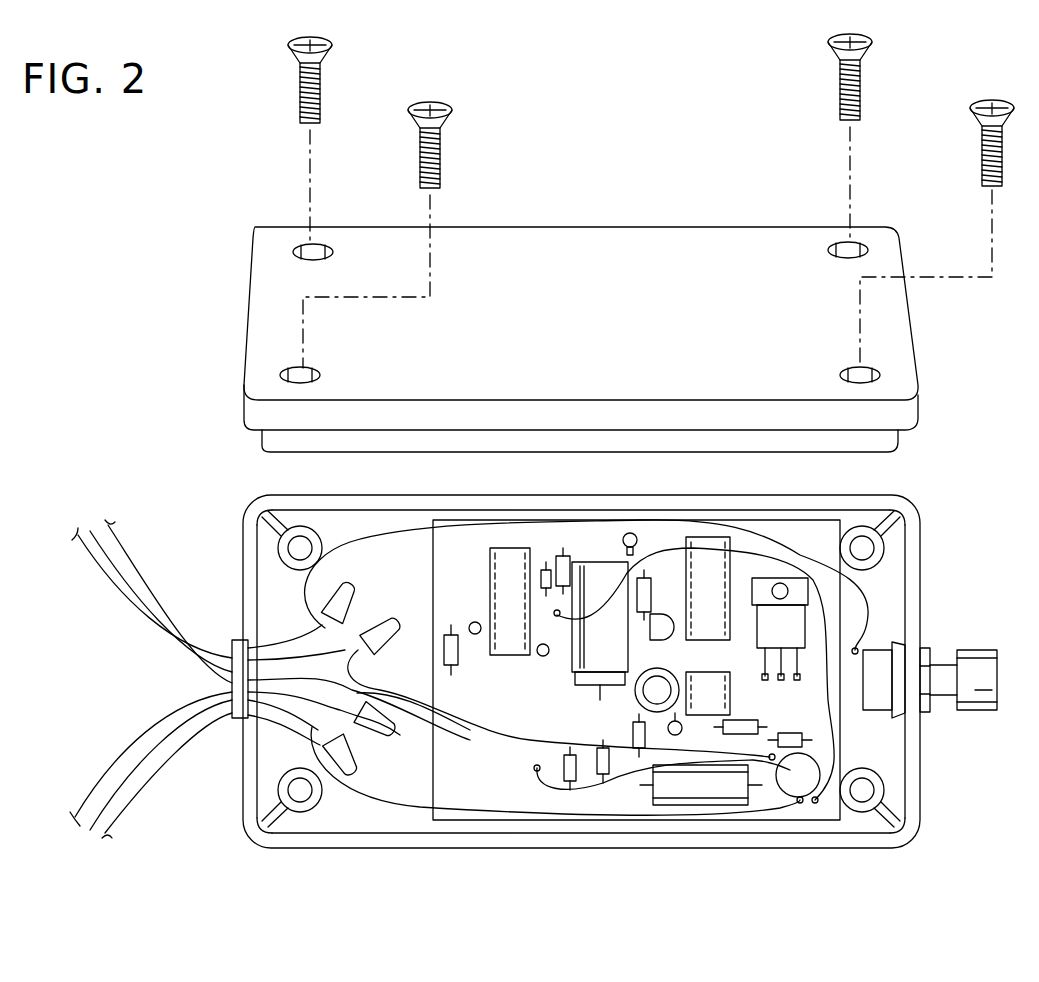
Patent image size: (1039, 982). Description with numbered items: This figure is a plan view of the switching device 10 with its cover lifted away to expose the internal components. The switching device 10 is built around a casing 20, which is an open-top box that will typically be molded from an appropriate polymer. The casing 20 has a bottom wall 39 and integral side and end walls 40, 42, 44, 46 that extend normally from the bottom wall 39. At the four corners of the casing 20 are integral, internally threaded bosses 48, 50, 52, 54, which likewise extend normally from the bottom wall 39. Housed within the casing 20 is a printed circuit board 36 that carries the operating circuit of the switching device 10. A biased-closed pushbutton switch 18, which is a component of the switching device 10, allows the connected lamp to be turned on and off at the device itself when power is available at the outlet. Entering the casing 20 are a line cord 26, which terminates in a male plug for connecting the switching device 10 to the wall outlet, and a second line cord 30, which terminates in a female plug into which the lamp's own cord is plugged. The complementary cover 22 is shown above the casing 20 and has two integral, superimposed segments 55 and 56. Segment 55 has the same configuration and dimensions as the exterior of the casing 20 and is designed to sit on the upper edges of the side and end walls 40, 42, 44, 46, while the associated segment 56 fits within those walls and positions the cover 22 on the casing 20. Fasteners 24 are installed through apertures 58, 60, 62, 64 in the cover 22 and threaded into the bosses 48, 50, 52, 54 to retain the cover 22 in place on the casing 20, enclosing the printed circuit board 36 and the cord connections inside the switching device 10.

The switching device 10 is at (185, 235).
The pushbutton switch 18 is at (975, 655).
The casing 20 is at (922, 554).
The cover 22 is at (918, 346).
The fasteners 24 is at (441, 112).
The line cord 26 is at (116, 748).
The second line cord 30 is at (106, 553).
The printed circuit board 36 is at (462, 820).
The bottom wall 39 is at (284, 605).
The side wall 40 is at (243, 752).
The end wall 42 is at (921, 750).
The side wall 44 is at (626, 490).
The end wall 46 is at (580, 848).
The boss 48 is at (305, 527).
The boss 50 is at (856, 527).
The boss 52 is at (858, 808).
The boss 54 is at (304, 808).
The cover segment 55 is at (244, 310).
The cover segment 56 is at (268, 444).
The aperture 58 is at (838, 249).
The aperture 60 is at (868, 368).
The aperture 62 is at (288, 366).
The aperture 64 is at (296, 250).